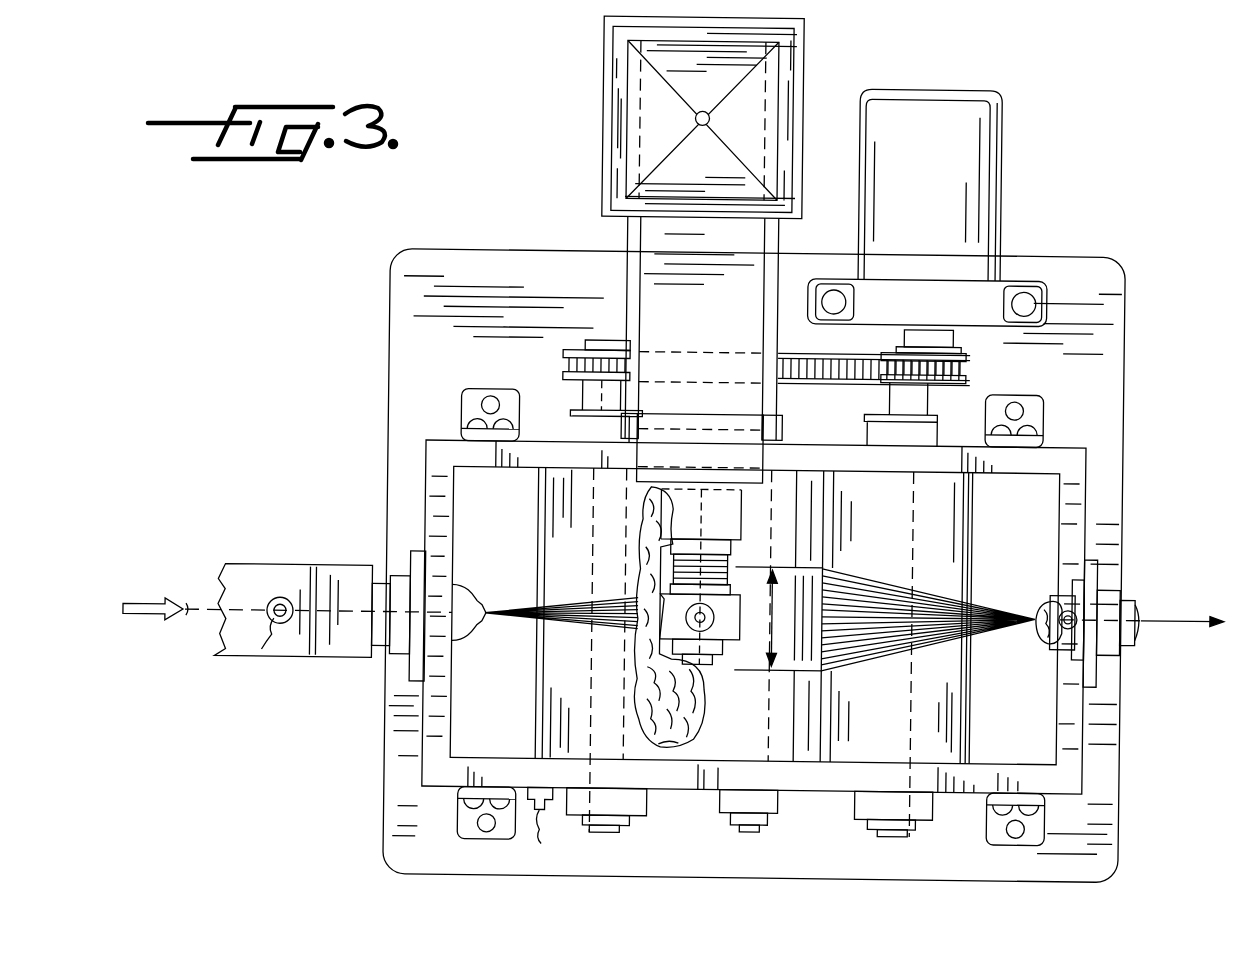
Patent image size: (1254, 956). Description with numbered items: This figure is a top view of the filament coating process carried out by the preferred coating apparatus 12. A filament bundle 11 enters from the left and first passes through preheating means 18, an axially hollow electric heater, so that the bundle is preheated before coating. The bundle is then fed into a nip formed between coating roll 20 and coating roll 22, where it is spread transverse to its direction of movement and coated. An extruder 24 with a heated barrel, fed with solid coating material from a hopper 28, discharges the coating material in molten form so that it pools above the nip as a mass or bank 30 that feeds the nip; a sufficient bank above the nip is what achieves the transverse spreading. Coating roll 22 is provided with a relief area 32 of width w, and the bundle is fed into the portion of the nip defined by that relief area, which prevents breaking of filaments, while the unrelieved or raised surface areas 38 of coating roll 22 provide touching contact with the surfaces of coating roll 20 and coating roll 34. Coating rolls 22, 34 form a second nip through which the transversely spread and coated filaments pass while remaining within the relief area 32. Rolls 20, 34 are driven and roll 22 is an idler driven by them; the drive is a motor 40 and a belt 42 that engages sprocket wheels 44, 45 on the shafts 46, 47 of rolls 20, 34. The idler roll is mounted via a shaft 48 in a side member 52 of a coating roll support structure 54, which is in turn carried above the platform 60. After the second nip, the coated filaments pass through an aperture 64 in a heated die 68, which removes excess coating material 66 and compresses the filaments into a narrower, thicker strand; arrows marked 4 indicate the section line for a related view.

The coating apparatus 12 is at (703, 565).
The platform 60 is at (1118, 300).
The coating roll support structure 54 is at (1095, 498).
The hopper 28 is at (626, 84).
The extruder 24 is at (620, 300).
The motor 40 is at (978, 162).
The belt 42 is at (818, 375).
The sprocket wheel 44 is at (568, 372).
The shaft 46 is at (600, 345).
The sprocket wheel 45 is at (962, 368).
The shaft 47 is at (893, 348).
The coating roll 20 is at (542, 508).
The preheating means 18 is at (246, 574).
The filament bundle 11 is at (500, 596).
The section line arrows 4 is at (522, 575).
The mass or bank of coating material 30 is at (642, 562).
The relief area 32 is at (818, 660).
The coating roll 22 is at (828, 556).
The raised surface areas 38 is at (805, 506).
The coating roll 34 is at (965, 504).
The excess coating material 66 is at (1045, 598).
The heated die 68 is at (1052, 652).
The aperture 64 is at (1142, 612).
The shaft 48 is at (754, 832).
The side member 52 is at (695, 790).